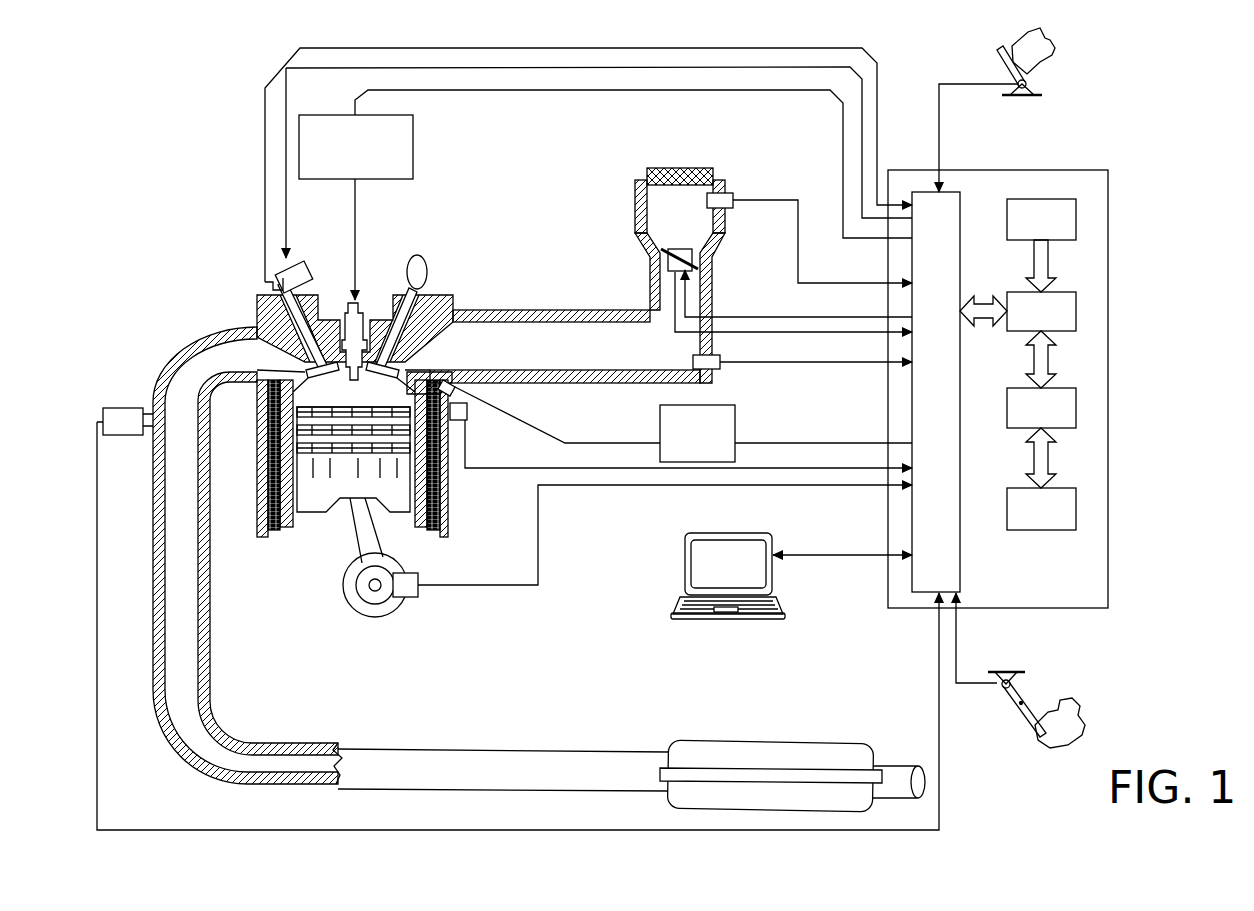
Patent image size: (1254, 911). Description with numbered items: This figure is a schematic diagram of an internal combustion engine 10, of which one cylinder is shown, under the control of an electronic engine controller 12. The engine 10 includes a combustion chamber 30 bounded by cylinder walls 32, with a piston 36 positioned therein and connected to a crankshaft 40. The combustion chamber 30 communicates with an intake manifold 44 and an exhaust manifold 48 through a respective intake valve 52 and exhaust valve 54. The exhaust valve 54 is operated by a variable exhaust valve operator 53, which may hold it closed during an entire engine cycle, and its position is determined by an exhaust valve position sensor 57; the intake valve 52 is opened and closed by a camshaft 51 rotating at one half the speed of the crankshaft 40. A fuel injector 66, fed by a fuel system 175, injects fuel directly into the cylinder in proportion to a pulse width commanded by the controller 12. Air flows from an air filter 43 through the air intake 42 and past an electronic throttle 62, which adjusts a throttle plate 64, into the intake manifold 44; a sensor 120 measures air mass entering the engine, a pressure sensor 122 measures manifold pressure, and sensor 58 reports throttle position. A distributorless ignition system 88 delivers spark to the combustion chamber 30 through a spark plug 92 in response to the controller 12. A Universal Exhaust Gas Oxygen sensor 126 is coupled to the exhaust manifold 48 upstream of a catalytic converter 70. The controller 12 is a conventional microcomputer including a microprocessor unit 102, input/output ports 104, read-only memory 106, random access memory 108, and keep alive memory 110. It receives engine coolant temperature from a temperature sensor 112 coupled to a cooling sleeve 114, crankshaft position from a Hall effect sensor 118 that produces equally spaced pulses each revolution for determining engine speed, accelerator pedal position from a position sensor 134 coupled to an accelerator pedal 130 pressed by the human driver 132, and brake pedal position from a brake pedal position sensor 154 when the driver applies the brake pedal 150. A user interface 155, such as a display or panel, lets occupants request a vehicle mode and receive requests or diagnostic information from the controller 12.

The internal combustion engine 10 is at (192, 250).
The electronic engine controller 12 is at (1103, 170).
The combustion chamber 30 is at (376, 485).
The cylinder walls 32 is at (297, 530).
The piston 36 is at (336, 490).
The crankshaft 40 is at (360, 603).
The air intake 42 is at (680, 281).
The air filter 43 is at (645, 172).
The intake manifold 44 is at (565, 346).
The exhaust manifold 48 is at (410, 559).
The camshaft 51 is at (412, 257).
The intake valve 52 is at (400, 360).
The variable exhaust valve operator 53 is at (290, 256).
The exhaust valve 54 is at (308, 368).
The exhaust valve position sensor 57 is at (278, 280).
The throttle position sensor 58 is at (660, 275).
The electronic throttle 62 is at (700, 258).
The throttle plate 64 is at (656, 256).
The fuel injector 66 is at (462, 398).
The catalytic converter 70 is at (705, 742).
The distributorless ignition system 88 is at (313, 115).
The spark plug 92 is at (354, 298).
The microprocessor unit 102 is at (1078, 305).
The input/output ports 104 is at (961, 193).
The read-only memory 106 is at (1078, 215).
The random access memory 108 is at (1078, 403).
The keep alive memory 110 is at (1078, 503).
The temperature sensor 112 is at (462, 421).
The cooling sleeve 114 is at (445, 492).
The Hall effect sensor 118 is at (420, 575).
The air mass sensor 120 is at (727, 195).
The pressure sensor 122 is at (727, 370).
The Universal Exhaust Gas Oxygen sensor 126 is at (103, 412).
The accelerator pedal 130 is at (1000, 62).
The human driver 132 is at (1052, 47).
The position sensor 134 is at (1030, 84).
The brake pedal 150 is at (1027, 728).
The brake pedal position sensor 154 is at (990, 680).
The user interface 155 is at (778, 617).
The fuel system 175 is at (786, 433).